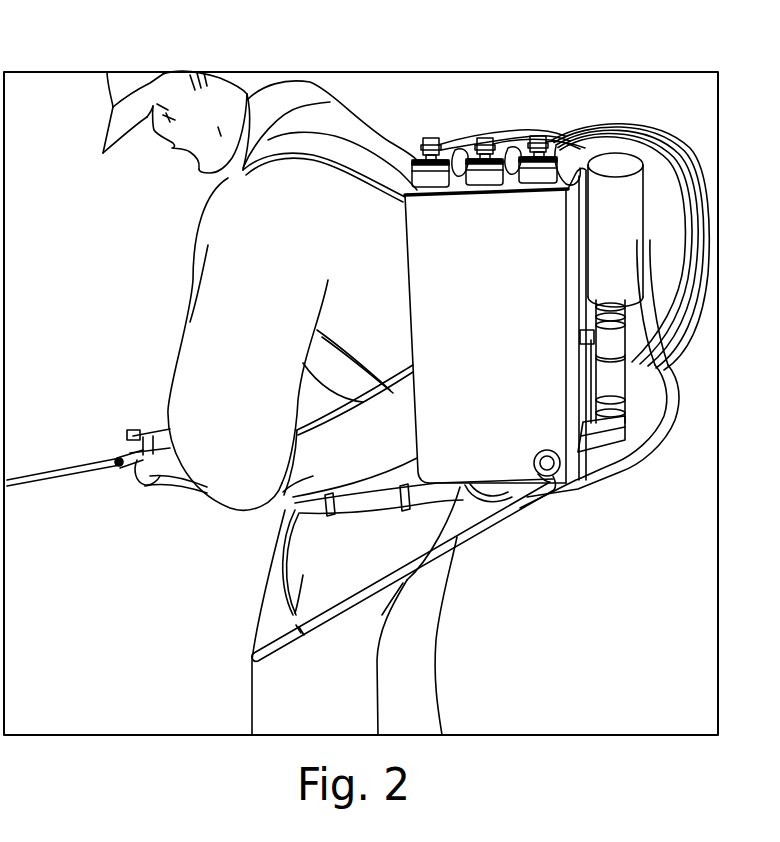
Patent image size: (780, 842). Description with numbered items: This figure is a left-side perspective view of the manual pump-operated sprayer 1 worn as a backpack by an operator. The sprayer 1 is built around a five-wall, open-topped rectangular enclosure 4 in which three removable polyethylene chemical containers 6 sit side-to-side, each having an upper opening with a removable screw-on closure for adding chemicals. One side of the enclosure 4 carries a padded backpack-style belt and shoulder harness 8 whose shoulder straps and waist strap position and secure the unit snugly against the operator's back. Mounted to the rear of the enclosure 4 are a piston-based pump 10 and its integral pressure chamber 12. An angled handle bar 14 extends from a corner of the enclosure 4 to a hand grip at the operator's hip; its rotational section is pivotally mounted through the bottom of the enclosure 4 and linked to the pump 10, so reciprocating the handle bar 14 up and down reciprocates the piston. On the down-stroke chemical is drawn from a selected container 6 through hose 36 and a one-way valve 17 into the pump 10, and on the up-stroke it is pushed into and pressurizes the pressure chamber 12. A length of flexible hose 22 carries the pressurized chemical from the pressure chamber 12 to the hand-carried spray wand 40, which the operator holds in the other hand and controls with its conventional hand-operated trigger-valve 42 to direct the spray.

The manual pump-operated sprayer 1 is at (553, 57).
The enclosure 4 is at (484, 253).
The chemical containers 6 is at (460, 150).
The belt and shoulder harness 8 is at (331, 167).
The piston-based pump 10 is at (627, 406).
The pressure chamber 12 is at (640, 242).
The handle bar 14 is at (466, 485).
The one-way valve 17 is at (580, 336).
The flexible hose 22 is at (650, 460).
The hose 36 is at (590, 317).
The spray wand 40 is at (32, 488).
The trigger-valve 42 is at (128, 450).